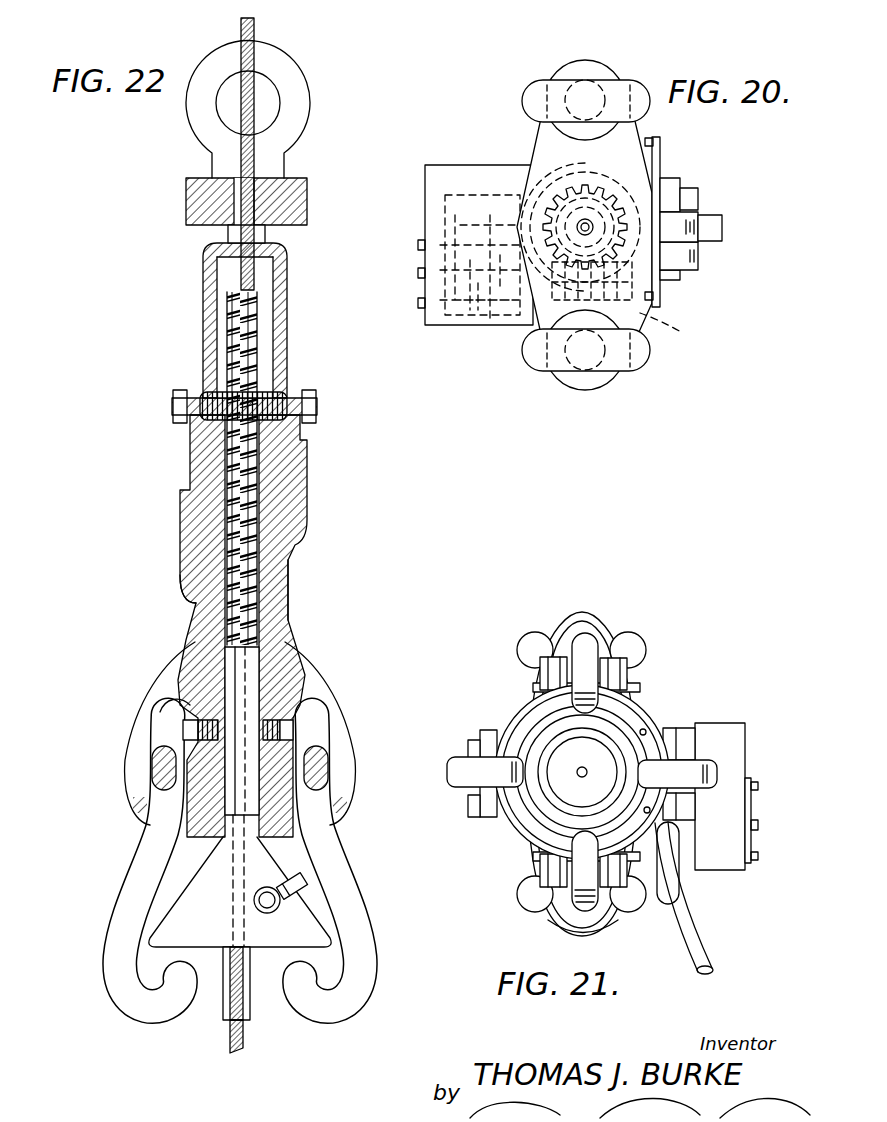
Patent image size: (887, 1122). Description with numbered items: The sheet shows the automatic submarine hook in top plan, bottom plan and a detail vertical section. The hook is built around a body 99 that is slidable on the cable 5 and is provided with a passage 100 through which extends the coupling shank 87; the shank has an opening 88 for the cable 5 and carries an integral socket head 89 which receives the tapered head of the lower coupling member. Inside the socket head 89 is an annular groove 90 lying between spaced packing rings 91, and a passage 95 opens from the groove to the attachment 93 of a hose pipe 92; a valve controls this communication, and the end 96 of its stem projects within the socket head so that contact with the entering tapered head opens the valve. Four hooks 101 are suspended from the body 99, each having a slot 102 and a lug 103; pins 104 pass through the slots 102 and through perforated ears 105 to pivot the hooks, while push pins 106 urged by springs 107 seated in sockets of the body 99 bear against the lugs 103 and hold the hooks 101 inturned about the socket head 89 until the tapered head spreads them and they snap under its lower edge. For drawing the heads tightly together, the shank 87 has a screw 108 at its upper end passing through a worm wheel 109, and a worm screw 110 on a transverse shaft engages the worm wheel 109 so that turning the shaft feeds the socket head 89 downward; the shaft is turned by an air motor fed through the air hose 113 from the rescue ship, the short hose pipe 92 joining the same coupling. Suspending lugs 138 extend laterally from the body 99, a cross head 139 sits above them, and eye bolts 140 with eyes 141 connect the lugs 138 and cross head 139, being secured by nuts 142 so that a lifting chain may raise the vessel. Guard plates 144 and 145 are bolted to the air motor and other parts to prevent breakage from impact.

In FIG. 22, the cable 5 is at (253, 40).
In FIG. 22, the coupling shank 87 is at (250, 660).
In FIG. 21, the opening 88 is at (586, 768).
In FIG. 22, the socket head 89 is at (310, 933).
In FIG. 21, the socket head 89 is at (657, 722).
In FIG. 21, the annular groove 90 is at (545, 735).
In FIG. 21, the packing rings 91 is at (530, 815).
In FIG. 22, the hose pipe 92 is at (300, 880).
In FIG. 21, the hose pipe 92 is at (670, 913).
In FIG. 22, the hose attachment 93 is at (256, 905).
In FIG. 21, the passage 95 is at (625, 802).
In FIG. 21, the valve stem end 96 is at (660, 823).
In FIG. 22, the body of submarine hook 99 is at (293, 550).
In FIG. 22, the passage 100 is at (263, 587).
In FIG. 22, the hooks 101 is at (123, 993).
In FIG. 20, the hooks 101 is at (722, 230).
In FIG. 21, the hooks 101 is at (590, 650).
In FIG. 22, the slot 102 is at (153, 760).
In FIG. 22, the lug 103 is at (173, 722).
In FIG. 20, the lug 103 is at (682, 227).
In FIG. 22, the pins 104 is at (328, 783).
In FIG. 20, the pins 104 is at (673, 178).
In FIG. 22, the perforated ears 105 is at (355, 737).
In FIG. 20, the perforated ears 105 is at (700, 197).
In FIG. 21, the perforated ears 105 is at (473, 742).
In FIG. 22, the push pins 106 is at (287, 730).
In FIG. 22, the springs 107 is at (193, 712).
In FIG. 22, the screw 108 is at (230, 518).
In FIG. 22, the worm wheel 109 is at (190, 382).
In FIG. 20, the worm wheel 109 is at (581, 209).
In FIG. 20, the worm screw 110 is at (689, 332).
In FIG. 21, the air hose 113 is at (707, 968).
In FIG. 22, the suspending lugs 138 is at (307, 472).
In FIG. 22, the cross head 139 is at (190, 203).
In FIG. 20, the cross head 139 is at (557, 147).
In FIG. 22, the eye bolts 140 is at (227, 237).
In FIG. 22, the eyes 141 is at (280, 133).
In FIG. 20, the eyes 141 is at (535, 100).
In FIG. 21, the eyes 141 is at (650, 648).
In FIG. 21, the nuts 142 is at (573, 632).
In FIG. 20, the guard plate 144 is at (427, 222).
In FIG. 21, the guard plate 144 is at (723, 863).
In FIG. 20, the guard plate 145 is at (650, 283).